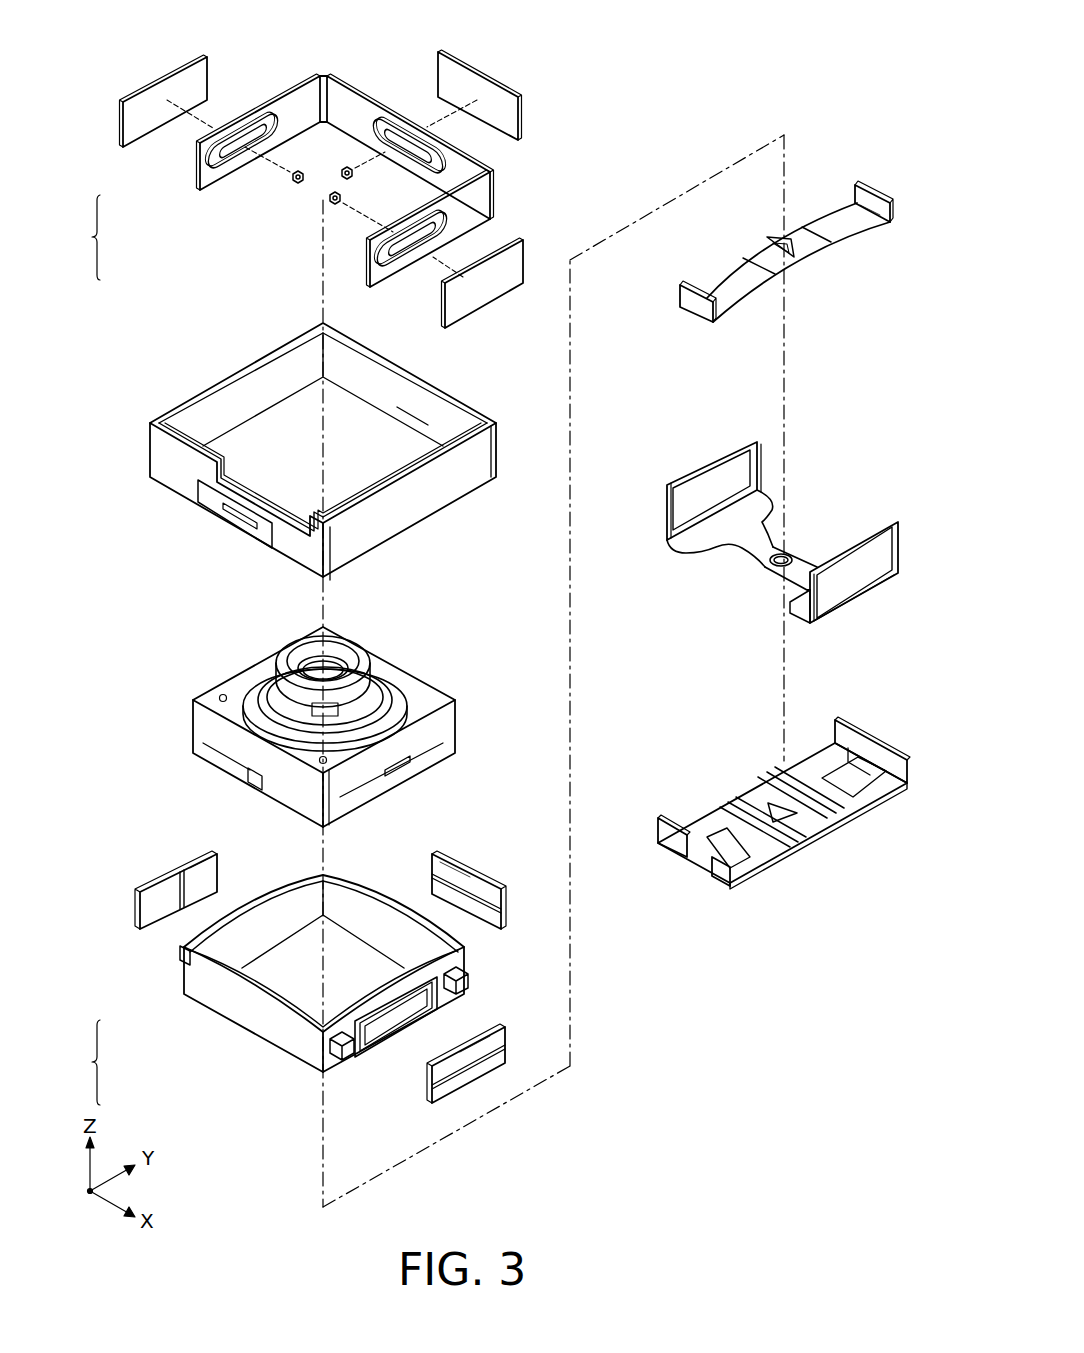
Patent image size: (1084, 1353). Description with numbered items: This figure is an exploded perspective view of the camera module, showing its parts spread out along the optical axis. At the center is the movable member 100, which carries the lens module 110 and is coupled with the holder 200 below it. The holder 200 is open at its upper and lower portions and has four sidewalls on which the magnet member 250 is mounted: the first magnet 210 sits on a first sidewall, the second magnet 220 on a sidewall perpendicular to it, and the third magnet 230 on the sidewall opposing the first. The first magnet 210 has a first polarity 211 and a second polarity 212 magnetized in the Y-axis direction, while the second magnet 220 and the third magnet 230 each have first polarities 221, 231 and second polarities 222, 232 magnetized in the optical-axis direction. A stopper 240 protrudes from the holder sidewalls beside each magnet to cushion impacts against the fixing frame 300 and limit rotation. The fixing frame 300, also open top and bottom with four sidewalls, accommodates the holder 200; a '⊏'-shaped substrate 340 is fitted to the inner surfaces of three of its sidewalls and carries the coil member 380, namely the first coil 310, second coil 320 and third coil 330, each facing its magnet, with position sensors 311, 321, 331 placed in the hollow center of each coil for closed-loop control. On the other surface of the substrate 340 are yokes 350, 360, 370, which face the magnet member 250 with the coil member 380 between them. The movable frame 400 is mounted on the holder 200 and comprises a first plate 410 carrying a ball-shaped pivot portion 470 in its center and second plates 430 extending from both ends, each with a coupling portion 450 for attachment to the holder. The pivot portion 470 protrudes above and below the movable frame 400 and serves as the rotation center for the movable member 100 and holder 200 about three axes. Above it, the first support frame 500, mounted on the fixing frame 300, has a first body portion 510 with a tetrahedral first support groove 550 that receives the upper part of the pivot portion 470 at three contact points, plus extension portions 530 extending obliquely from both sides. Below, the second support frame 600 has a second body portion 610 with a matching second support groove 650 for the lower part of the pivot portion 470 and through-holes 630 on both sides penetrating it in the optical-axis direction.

The movable member 100 is at (183, 678).
The lens module 110 is at (287, 648).
The holder 200 is at (258, 1025).
The first magnet 210 is at (122, 913).
The first polarity 211 is at (160, 897).
The second polarity 212 is at (204, 876).
The second magnet 220 is at (527, 905).
The first polarity 221 is at (480, 893).
The second polarity 222 is at (440, 874).
The third magnet 230 is at (461, 1108).
The first polarity 231 is at (495, 1066).
The second polarity 232 is at (514, 1038).
The stopper 240 is at (178, 957).
The magnet member 250 is at (98, 1063).
The fixing frame 300 is at (160, 452).
The first coil 310 is at (285, 130).
The position sensor 311 is at (293, 182).
The second coil 320 is at (382, 133).
The position sensor 321 is at (340, 178).
The third coil 330 is at (400, 262).
The position sensor 331 is at (333, 205).
The substrate 340 is at (343, 98).
The yoke 350 is at (188, 82).
The yoke 360 is at (460, 98).
The yoke 370 is at (515, 258).
The coil member 380 is at (98, 237).
The movable frame 400 is at (722, 397).
The first plate 410 is at (787, 553).
The second plate 430 is at (764, 530).
The coupling portion 450 is at (730, 457).
The pivot portion 470 is at (832, 527).
The first support frame 500 is at (745, 84).
The first body portion 510 is at (795, 226).
The extension portion 530 is at (838, 222).
The first support groove 550 is at (765, 242).
The second support frame 600 is at (614, 696).
The second body portion 610 is at (740, 836).
The through-hole 630 is at (722, 814).
The second support groove 650 is at (768, 800).